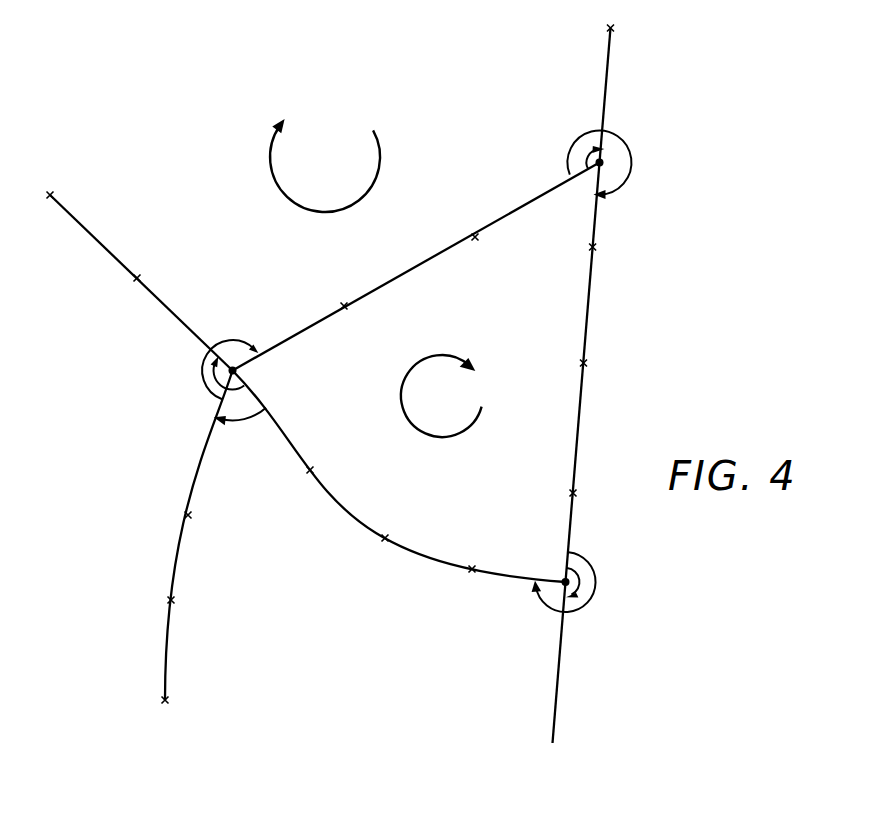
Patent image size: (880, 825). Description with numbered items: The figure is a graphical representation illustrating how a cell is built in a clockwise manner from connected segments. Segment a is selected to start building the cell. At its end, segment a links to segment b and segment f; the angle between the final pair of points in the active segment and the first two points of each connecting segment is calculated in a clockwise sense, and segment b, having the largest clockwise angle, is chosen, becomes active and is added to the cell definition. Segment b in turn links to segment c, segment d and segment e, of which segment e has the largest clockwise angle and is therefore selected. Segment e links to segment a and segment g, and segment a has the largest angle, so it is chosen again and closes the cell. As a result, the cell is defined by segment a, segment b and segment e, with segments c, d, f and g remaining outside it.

The segment a is at (585, 373).
The segment b is at (399, 477).
The segment c is at (197, 537).
The segment d is at (140, 281).
The segment e is at (416, 267).
The segment f is at (566, 662).
The segment g is at (614, 94).